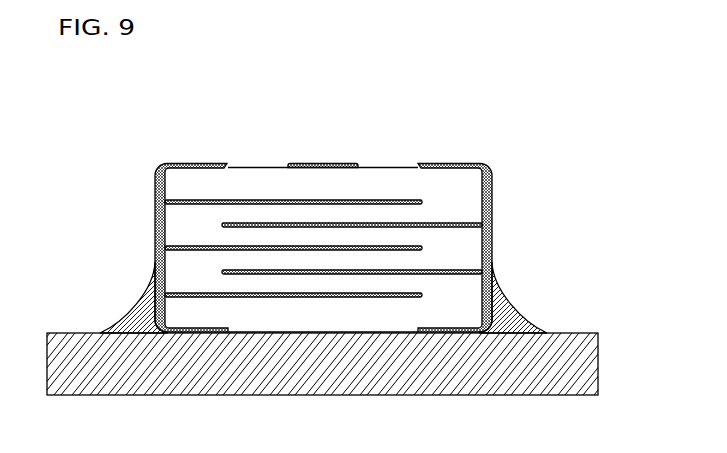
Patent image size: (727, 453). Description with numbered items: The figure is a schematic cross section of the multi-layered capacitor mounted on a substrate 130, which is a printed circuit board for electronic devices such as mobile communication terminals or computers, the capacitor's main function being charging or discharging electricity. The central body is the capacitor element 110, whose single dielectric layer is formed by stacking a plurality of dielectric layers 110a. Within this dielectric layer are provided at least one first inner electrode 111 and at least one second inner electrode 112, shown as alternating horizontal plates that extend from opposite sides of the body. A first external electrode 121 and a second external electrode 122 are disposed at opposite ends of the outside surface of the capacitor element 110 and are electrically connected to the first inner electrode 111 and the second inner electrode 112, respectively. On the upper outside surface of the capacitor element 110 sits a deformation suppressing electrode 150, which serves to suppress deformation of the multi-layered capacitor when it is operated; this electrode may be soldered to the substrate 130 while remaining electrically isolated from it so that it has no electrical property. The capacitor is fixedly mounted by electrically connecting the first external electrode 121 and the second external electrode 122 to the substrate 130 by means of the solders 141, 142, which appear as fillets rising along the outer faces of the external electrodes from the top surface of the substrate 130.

The capacitor element 110 is at (322, 203).
The dielectric layers 110a is at (255, 182).
The first inner electrode 111 is at (153, 274).
The second inner electrode 112 is at (474, 277).
The first external electrode 121 is at (155, 189).
The second external electrode 122 is at (491, 182).
The substrate 130 is at (585, 363).
The solder 141 is at (133, 322).
The solder 142 is at (518, 323).
The deformation suppressing electrode 150 is at (325, 163).